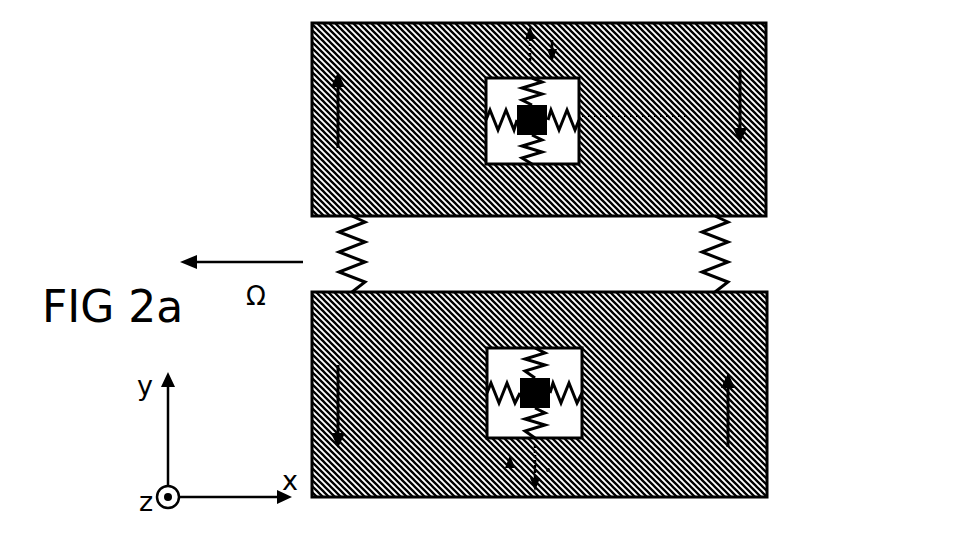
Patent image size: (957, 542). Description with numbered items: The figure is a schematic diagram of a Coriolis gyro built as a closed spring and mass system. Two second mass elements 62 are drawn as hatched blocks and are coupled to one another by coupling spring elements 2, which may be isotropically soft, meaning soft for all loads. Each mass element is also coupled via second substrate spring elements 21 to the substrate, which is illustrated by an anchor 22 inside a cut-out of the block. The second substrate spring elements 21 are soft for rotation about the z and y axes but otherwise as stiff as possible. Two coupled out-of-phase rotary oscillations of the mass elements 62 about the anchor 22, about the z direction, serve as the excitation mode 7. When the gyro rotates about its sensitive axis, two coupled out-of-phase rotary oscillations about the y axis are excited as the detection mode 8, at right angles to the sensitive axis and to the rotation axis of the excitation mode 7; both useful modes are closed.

The second mass element 62 is at (766, 124).
The excitation mode 7 is at (311, 85).
The coupling spring element 2 is at (368, 262).
The second substrate spring element 21 is at (580, 100).
The anchor 22 is at (490, 150).
The detection mode 8 is at (551, 258).